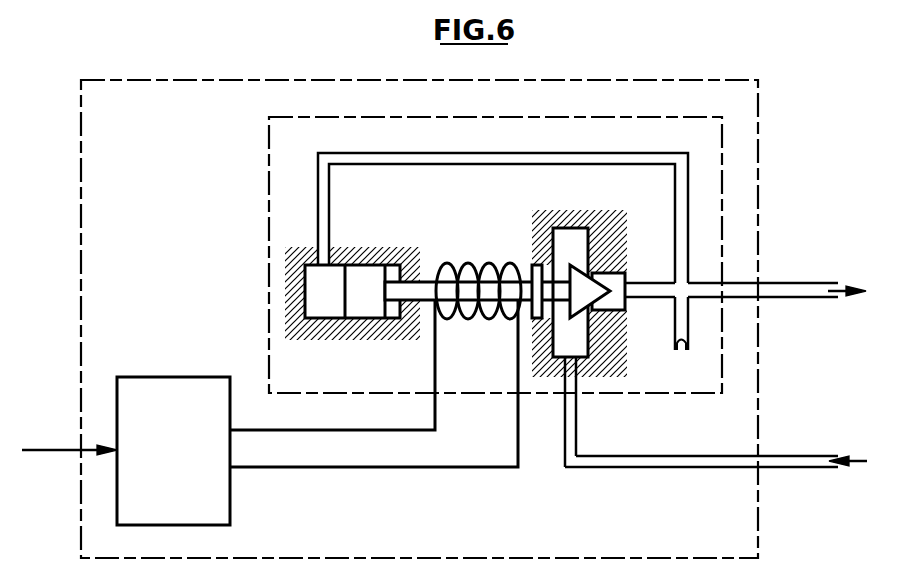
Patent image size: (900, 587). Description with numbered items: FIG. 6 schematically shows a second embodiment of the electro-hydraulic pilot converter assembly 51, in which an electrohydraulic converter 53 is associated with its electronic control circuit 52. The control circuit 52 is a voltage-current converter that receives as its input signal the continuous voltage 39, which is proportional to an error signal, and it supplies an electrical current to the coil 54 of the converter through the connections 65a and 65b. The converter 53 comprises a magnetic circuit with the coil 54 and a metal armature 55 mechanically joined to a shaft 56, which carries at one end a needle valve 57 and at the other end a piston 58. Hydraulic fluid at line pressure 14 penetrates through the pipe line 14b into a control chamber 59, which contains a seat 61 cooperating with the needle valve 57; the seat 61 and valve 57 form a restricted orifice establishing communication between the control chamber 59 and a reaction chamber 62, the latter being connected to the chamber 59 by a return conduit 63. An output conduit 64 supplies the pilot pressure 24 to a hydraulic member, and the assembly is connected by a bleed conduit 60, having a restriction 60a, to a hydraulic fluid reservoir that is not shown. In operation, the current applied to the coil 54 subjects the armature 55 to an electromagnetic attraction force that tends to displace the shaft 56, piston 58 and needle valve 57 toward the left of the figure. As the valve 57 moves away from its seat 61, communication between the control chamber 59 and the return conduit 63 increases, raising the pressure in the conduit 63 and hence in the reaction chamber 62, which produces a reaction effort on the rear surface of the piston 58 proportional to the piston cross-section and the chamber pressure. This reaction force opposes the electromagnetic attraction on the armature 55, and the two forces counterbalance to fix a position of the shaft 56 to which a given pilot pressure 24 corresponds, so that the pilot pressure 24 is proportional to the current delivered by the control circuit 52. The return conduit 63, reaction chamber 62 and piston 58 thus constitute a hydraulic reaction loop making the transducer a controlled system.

The assembly 51 is at (218, 80).
The electrohydraulic converter 53 is at (268, 161).
The electronic control circuit 52 is at (167, 390).
The continuous voltage 39 is at (44, 450).
The connection 65a is at (338, 431).
The connection 65b is at (338, 468).
The reaction chamber 62 is at (322, 302).
The piston 58 is at (367, 302).
The shaft 56 is at (433, 286).
The coil 54 is at (474, 268).
The metal armature 55 is at (531, 272).
The needle valve 57 is at (595, 277).
The seat 61 is at (597, 312).
The control chamber 59 is at (575, 344).
The pipe line 14b is at (670, 459).
The line pressure 14 is at (860, 459).
The return conduit 63 is at (482, 163).
The output conduit 64 is at (703, 291).
The pilot pressure 24 is at (836, 284).
The bleed conduit 60 is at (681, 315).
The restriction 60a is at (683, 351).